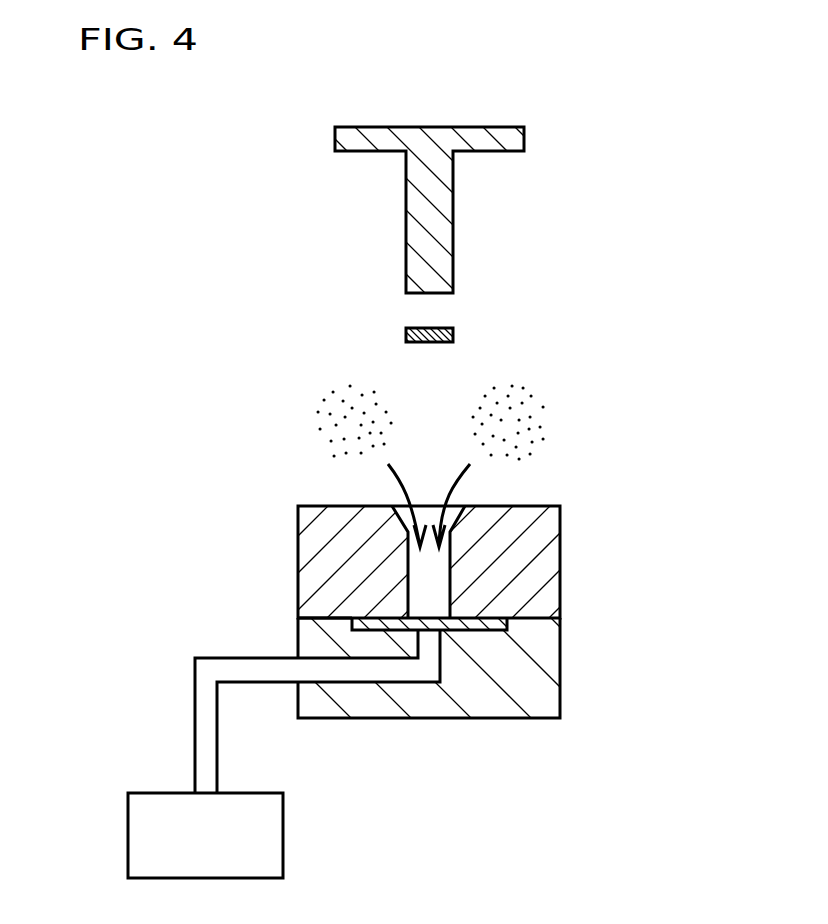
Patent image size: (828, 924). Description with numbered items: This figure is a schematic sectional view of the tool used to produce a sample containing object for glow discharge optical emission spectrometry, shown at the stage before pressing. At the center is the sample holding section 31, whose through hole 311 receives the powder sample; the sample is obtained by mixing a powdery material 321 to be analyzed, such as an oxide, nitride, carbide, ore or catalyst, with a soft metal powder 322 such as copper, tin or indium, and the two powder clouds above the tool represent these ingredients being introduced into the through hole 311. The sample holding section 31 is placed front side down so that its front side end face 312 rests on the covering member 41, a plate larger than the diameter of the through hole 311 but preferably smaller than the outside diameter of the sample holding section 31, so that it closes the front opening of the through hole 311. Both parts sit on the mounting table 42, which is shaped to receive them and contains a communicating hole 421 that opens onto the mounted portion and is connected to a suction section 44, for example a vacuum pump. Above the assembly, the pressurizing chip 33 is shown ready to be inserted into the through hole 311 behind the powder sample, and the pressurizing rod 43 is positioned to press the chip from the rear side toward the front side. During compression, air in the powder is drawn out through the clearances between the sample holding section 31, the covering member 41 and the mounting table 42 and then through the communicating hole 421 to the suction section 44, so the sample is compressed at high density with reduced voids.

The sample holding section 31 is at (537, 586).
The through hole 311 is at (412, 580).
The front side end face 312 is at (306, 618).
The material to be analyzed 321 is at (327, 430).
The metal powder 322 is at (535, 428).
The pressurizing chip 33 is at (407, 334).
The covering member 41 is at (508, 625).
The mounting table 42 is at (537, 695).
The communicating hole 421 is at (400, 682).
The pressurizing rod 43 is at (410, 247).
The suction section 44 is at (245, 793).